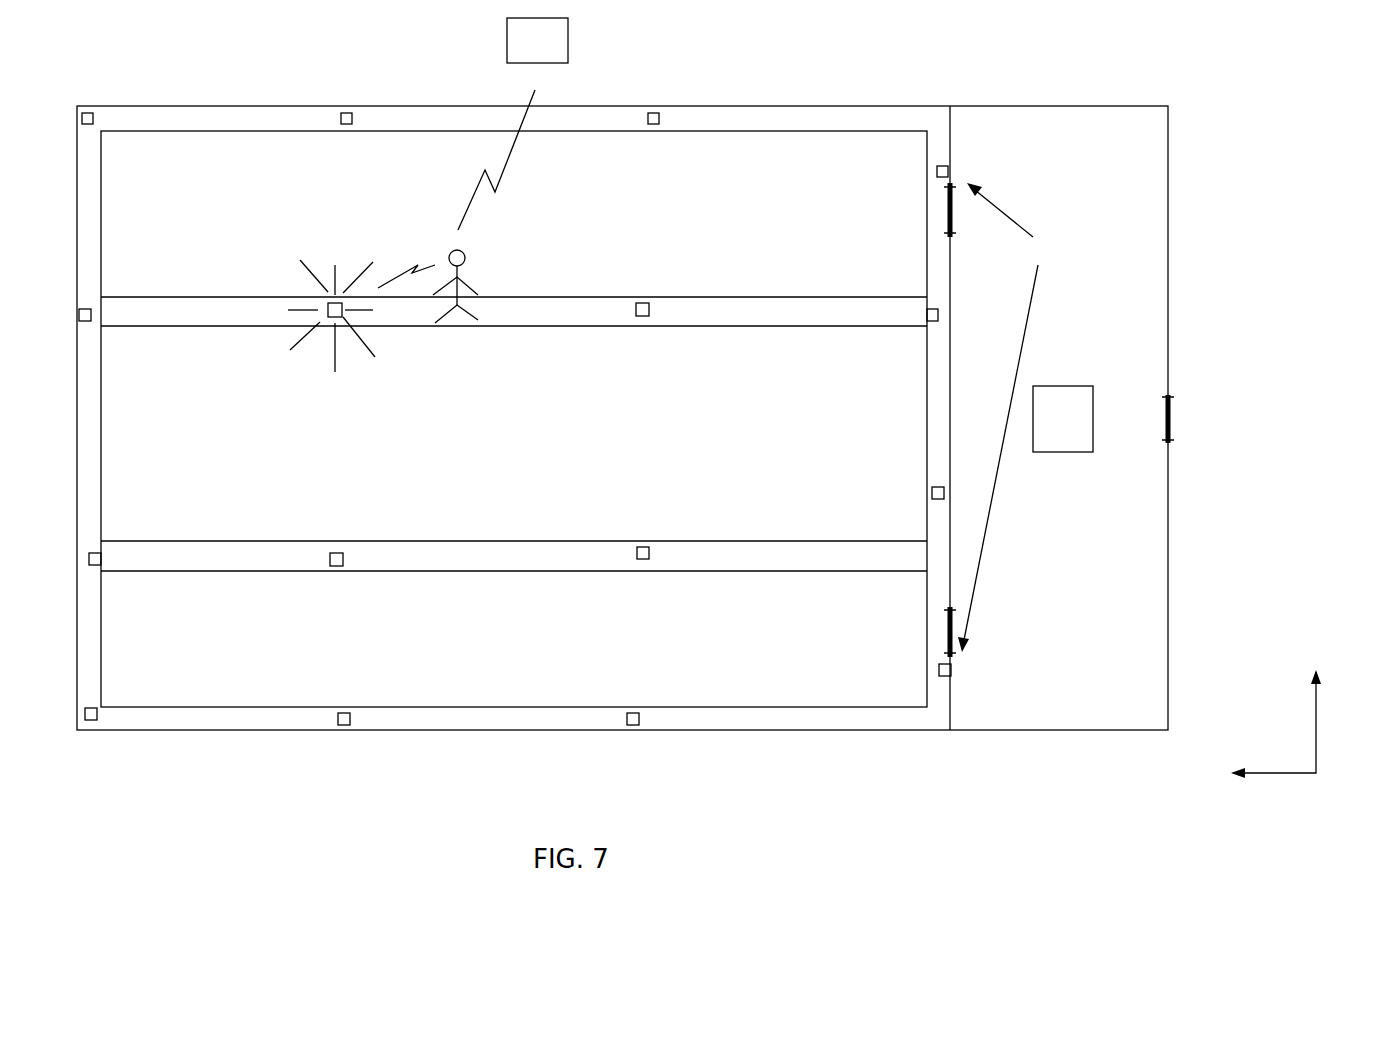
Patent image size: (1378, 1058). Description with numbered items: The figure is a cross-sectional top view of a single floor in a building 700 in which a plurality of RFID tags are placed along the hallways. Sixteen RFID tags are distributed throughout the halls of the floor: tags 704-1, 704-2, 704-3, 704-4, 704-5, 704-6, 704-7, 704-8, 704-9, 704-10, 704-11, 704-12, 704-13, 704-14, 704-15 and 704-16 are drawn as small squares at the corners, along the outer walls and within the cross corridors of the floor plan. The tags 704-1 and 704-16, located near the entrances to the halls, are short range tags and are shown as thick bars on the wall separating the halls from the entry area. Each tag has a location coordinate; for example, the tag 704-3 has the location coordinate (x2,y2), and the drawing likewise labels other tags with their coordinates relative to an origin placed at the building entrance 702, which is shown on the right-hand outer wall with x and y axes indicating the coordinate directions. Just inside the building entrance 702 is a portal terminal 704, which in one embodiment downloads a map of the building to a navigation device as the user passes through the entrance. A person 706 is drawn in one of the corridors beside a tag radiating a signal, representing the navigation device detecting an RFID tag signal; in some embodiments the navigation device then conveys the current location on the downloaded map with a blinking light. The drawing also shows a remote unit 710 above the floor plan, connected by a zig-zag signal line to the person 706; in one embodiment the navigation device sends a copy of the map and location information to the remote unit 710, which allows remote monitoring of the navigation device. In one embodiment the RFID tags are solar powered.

The building 700 is at (1220, 72).
The building entrance 702 is at (1170, 417).
The portal terminal 704 is at (1078, 432).
The user with mobile terminal 706 is at (475, 278).
The remote unit 710 is at (552, 50).
The RFID tag 704-1 is at (950, 677).
The RFID tag 704-2 is at (639, 720).
The RFID tag 704-3 is at (350, 718).
The RFID tag 704-4 is at (97, 713).
The RFID tag 704-5 is at (102, 558).
The RFID tag 704-6 is at (343, 558).
The RFID tag 704-7 is at (649, 553).
The RFID tag 704-8 is at (932, 492).
The RFID tag 704-9 is at (928, 321).
The RFID tag 704-10 is at (649, 313).
The RFID tag 704-11 is at (342, 316).
The RFID tag 704-12 is at (91, 315).
The RFID tag 704-13 is at (93, 118).
The RFID tag 704-14 is at (347, 125).
The RFID tag 704-15 is at (653, 125).
The RFID tag 704-16 is at (937, 171).